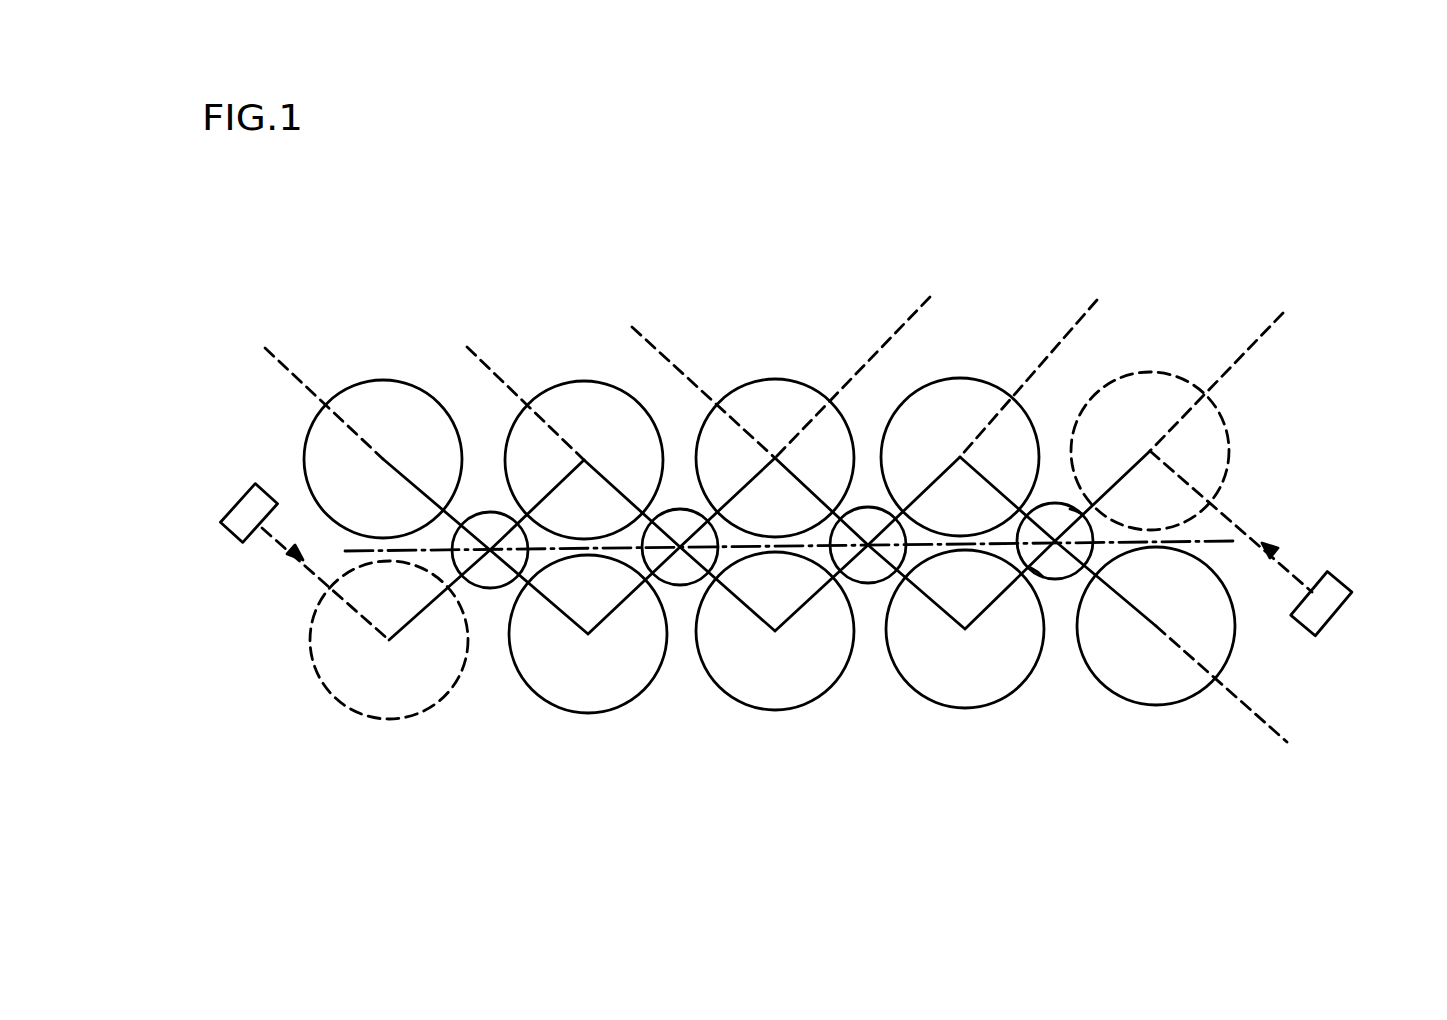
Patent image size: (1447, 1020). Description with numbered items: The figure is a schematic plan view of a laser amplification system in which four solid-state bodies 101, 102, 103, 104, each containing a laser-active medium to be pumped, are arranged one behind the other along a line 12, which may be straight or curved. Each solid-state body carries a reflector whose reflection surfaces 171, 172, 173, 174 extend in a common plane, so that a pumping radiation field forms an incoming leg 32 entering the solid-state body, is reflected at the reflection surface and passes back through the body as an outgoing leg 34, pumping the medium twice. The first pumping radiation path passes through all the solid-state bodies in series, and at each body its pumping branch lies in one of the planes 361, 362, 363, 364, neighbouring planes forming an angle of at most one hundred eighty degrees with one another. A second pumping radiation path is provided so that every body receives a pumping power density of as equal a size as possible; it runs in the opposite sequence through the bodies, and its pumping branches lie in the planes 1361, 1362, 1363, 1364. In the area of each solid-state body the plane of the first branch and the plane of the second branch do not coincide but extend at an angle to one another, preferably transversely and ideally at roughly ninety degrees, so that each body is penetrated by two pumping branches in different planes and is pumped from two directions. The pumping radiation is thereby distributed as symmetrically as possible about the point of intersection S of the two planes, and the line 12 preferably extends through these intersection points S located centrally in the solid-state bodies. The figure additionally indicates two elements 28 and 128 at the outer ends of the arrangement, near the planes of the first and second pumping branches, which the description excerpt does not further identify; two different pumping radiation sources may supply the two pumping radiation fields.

The line 12 is at (1235, 541).
The solid-state body 101 is at (1076, 553).
The solid-state body 102 is at (868, 597).
The solid-state body 103 is at (680, 600).
The solid-state body 104 is at (490, 600).
The reflection surface 171 is at (1057, 505).
The reflection surface 172 is at (868, 484).
The reflection surface 173 is at (680, 486).
The reflection surface 174 is at (490, 487).
The image recording device (sensor) 28 is at (1350, 597).
The image recording device (sensor) 128 is at (222, 520).
The incoming leg 32 is at (1080, 510).
The outgoing leg 34 is at (1043, 577).
The plane 361 is at (1283, 313).
The plane 362 is at (645, 342).
The plane 363 is at (900, 327).
The plane 364 is at (293, 378).
The plane 1361 is at (430, 606).
The plane 1362 is at (483, 376).
The plane 1363 is at (1100, 296).
The plane 1364 is at (1270, 727).
The point of intersection S is at (442, 578).